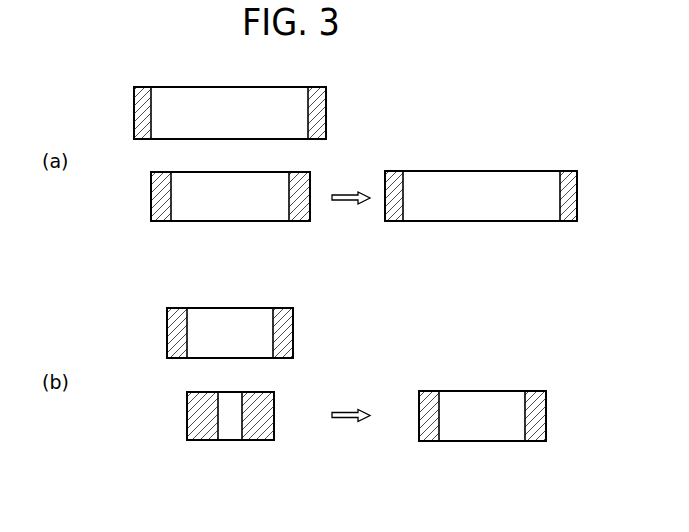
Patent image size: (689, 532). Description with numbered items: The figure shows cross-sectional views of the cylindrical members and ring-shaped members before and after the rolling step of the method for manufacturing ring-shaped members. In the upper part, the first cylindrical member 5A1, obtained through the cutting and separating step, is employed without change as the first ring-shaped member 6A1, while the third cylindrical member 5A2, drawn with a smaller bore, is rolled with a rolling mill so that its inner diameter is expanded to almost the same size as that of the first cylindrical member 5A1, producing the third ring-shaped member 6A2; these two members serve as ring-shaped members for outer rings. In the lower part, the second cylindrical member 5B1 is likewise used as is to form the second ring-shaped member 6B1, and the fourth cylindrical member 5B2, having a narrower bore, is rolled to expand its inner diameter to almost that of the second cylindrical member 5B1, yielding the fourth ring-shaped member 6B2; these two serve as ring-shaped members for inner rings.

The first cylindrical member 5A1 is at (288, 99).
The first ring-shaped member 6A1 is at (326, 90).
The third cylindrical member 5A2 is at (310, 215).
The third ring-shaped member 6A2 is at (568, 170).
The second cylindrical member 5B1 is at (289, 325).
The second ring-shaped member 6B1 is at (293, 325).
The fourth cylindrical member 5B2 is at (274, 433).
The fourth ring-shaped member 6B2 is at (532, 390).